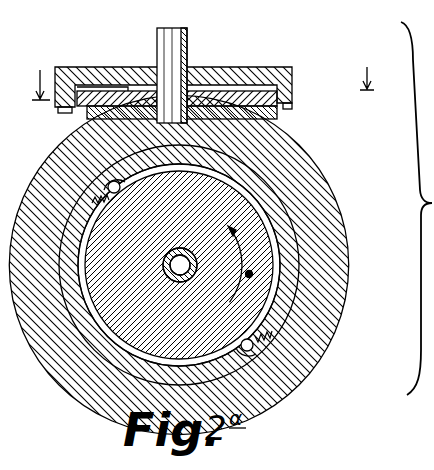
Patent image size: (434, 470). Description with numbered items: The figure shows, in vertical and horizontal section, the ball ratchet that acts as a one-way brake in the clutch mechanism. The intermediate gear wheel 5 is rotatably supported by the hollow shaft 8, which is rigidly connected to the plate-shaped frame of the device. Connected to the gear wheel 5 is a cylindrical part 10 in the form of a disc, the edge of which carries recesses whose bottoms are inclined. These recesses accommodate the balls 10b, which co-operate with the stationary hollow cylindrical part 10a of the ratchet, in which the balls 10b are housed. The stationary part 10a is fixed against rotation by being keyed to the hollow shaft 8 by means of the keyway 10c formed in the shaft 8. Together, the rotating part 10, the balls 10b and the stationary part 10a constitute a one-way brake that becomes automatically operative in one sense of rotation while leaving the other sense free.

The stationary part of the ball ratchet 10a is at (347, 89).
The cylindrical part 10 is at (108, 91).
The hollow shaft 8 is at (188, 40).
The intermediate gear wheel 5 is at (114, 112).
The balls 10b is at (288, 364).
The keyway 10c is at (166, 271).